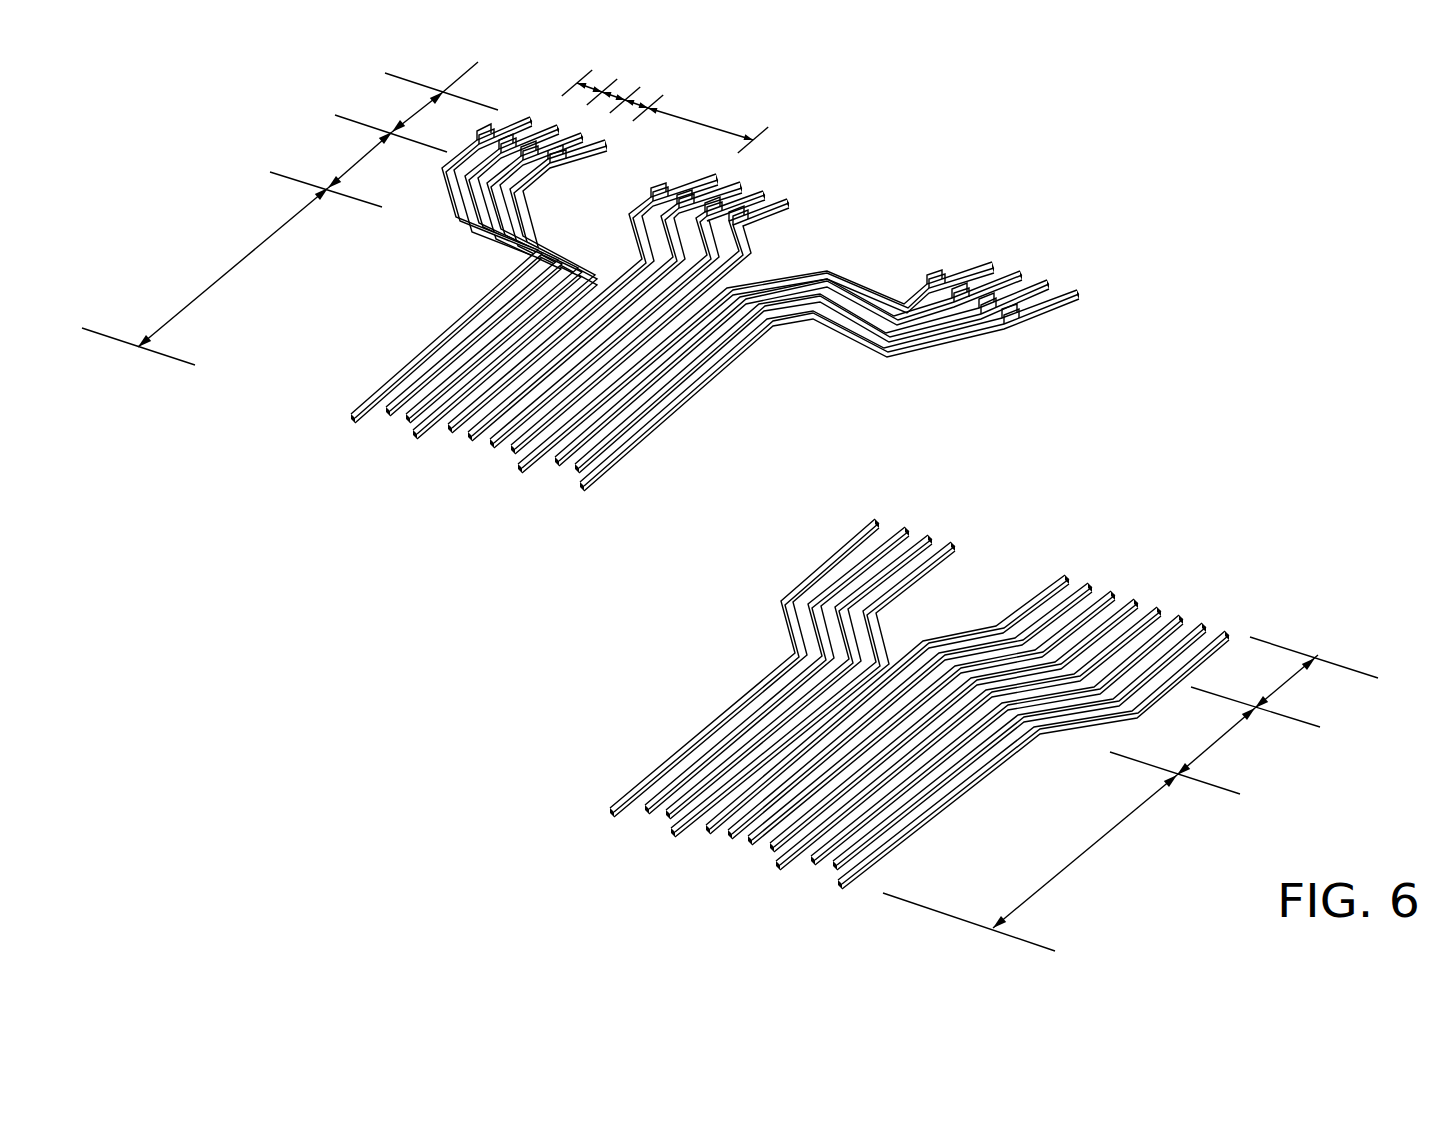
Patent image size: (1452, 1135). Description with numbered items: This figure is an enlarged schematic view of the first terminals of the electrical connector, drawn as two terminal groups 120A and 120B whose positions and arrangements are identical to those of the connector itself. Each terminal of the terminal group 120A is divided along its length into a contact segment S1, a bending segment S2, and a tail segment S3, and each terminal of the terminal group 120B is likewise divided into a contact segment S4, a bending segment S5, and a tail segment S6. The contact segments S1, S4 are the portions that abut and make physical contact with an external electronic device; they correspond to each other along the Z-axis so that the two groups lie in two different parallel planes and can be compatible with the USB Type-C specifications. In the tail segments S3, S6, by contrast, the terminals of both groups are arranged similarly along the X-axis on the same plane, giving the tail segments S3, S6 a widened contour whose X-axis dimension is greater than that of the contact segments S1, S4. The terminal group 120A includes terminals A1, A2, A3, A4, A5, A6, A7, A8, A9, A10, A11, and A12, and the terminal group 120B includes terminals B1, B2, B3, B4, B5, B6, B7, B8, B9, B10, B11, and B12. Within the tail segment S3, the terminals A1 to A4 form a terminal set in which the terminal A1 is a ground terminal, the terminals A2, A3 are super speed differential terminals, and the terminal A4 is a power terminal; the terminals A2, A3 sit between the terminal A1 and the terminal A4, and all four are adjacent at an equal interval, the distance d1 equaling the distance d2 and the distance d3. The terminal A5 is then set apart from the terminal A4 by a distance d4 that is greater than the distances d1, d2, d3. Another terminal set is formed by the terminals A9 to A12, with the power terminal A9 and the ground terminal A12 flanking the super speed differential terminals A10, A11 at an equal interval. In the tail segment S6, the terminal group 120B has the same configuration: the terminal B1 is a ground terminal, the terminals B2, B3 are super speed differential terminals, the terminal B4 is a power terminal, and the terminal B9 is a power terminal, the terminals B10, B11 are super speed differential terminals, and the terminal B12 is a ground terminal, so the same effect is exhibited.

The terminal group 120A is at (721, 343).
The terminal group 120B is at (918, 700).
The terminal A1 is at (450, 261).
The terminal A2 is at (479, 262).
The terminal A3 is at (501, 269).
The terminal A4 is at (516, 281).
The terminal A5 is at (589, 293).
The terminal A6 is at (611, 302).
The terminal A7 is at (633, 309).
The terminal A8 is at (655, 316).
The terminal A9 is at (759, 357).
The terminal A10 is at (794, 358).
The terminal A11 is at (819, 365).
The terminal A12 is at (836, 378).
The terminal B1 is at (1042, 749).
The terminal B2 is at (1026, 736).
The terminal B3 is at (1002, 729).
The terminal B4 is at (973, 728).
The terminal B5 is at (958, 715).
The terminal B6 is at (936, 708).
The terminal B7 is at (914, 701).
The terminal B8 is at (892, 694).
The terminal B9 is at (825, 678).
The terminal B10 is at (810, 664).
The terminal B11 is at (785, 658).
The terminal B12 is at (751, 655).
The contact segment S1 is at (232, 268).
The bending segment S2 is at (381, 151).
The tail segment S3 is at (434, 97).
The contact segment S4 is at (1061, 851).
The bending segment S5 is at (1248, 733).
The tail segment S6 is at (1314, 675).
The distance d1 is at (589, 76).
The distance d2 is at (621, 85).
The distance d3 is at (644, 95).
The distance d4 is at (708, 125).